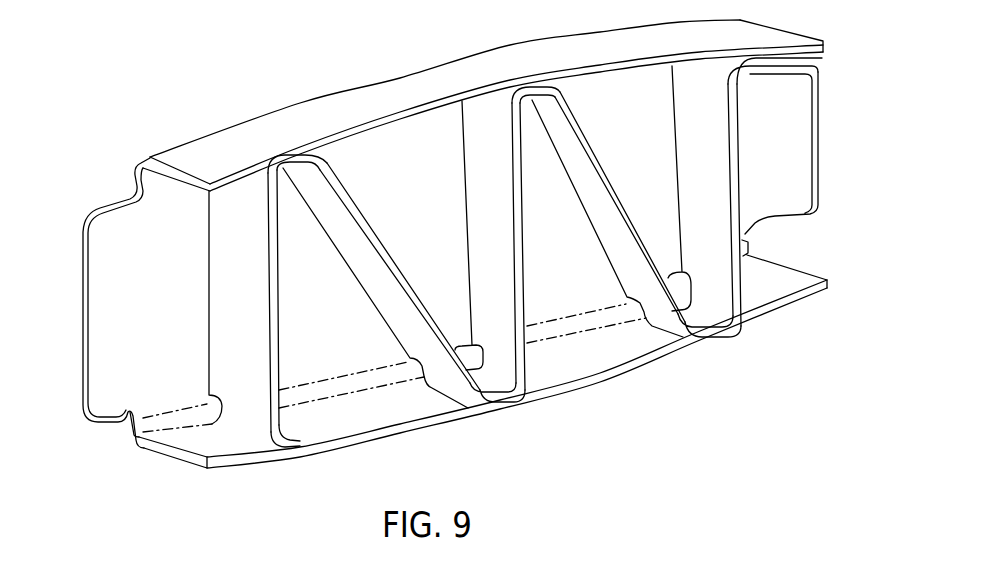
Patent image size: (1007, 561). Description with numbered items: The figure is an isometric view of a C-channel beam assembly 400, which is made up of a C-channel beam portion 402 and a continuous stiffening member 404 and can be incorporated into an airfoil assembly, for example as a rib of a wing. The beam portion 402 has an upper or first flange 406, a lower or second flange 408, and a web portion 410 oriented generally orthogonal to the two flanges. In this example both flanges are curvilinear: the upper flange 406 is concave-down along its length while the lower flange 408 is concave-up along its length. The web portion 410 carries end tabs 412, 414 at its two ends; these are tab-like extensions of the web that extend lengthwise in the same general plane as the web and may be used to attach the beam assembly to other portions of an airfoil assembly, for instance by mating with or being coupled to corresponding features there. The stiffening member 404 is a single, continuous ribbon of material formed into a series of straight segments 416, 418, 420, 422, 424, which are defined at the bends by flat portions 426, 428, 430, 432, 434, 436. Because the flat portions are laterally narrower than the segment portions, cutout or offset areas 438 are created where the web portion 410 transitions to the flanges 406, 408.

The C-channel beam assembly 400 is at (172, 82).
The C-channel beam portion 402 is at (343, 97).
The continuous stiffening member 404 is at (233, 301).
The upper flange 406 is at (397, 100).
The lower flange 408 is at (367, 417).
The web portion 410 is at (421, 182).
The end tab 412 is at (107, 300).
The end tab 414 is at (792, 162).
The straight segment 416 is at (277, 303).
The straight segment 418 is at (370, 260).
The straight segment 420 is at (508, 235).
The straight segment 422 is at (600, 195).
The straight segment 424 is at (725, 193).
The flat portion 426 is at (217, 440).
The flat portion 428 is at (295, 162).
The flat portion 430 is at (500, 375).
The flat portion 432 is at (538, 97).
The flat portion 434 is at (700, 313).
The flat portion 436 is at (818, 62).
The cutout or offset area 438 is at (200, 404).